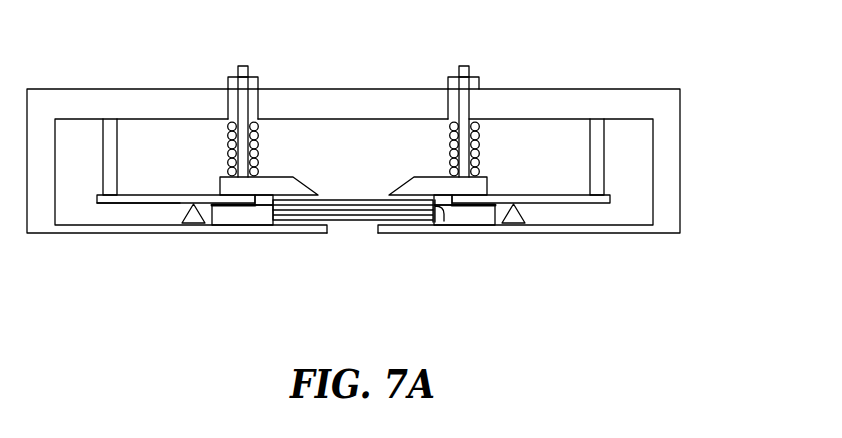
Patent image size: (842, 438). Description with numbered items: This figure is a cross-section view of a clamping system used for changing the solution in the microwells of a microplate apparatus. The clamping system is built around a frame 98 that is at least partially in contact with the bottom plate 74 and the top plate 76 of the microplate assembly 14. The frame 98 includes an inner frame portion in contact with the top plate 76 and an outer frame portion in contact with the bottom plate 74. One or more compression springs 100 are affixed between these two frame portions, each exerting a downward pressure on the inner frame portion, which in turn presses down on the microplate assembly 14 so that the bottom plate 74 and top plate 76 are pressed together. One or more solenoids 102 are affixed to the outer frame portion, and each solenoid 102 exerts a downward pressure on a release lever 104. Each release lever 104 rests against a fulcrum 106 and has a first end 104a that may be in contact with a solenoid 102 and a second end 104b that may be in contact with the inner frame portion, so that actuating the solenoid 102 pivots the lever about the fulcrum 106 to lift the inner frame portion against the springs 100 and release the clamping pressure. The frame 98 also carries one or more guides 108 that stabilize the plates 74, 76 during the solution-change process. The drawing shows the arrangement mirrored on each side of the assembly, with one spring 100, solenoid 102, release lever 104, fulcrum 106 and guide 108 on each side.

The frame 98 is at (582, 101).
The compression spring 100 is at (256, 141).
The solenoid 102 is at (106, 153).
The release lever 104 is at (133, 214).
The first end 104a is at (113, 205).
The second end 104b is at (240, 201).
The fulcrum 106 is at (520, 214).
The guide 108 is at (248, 218).
The top plate 76 is at (349, 200).
The bottom plate 74 is at (350, 219).
The microplate assembly 14 is at (442, 213).